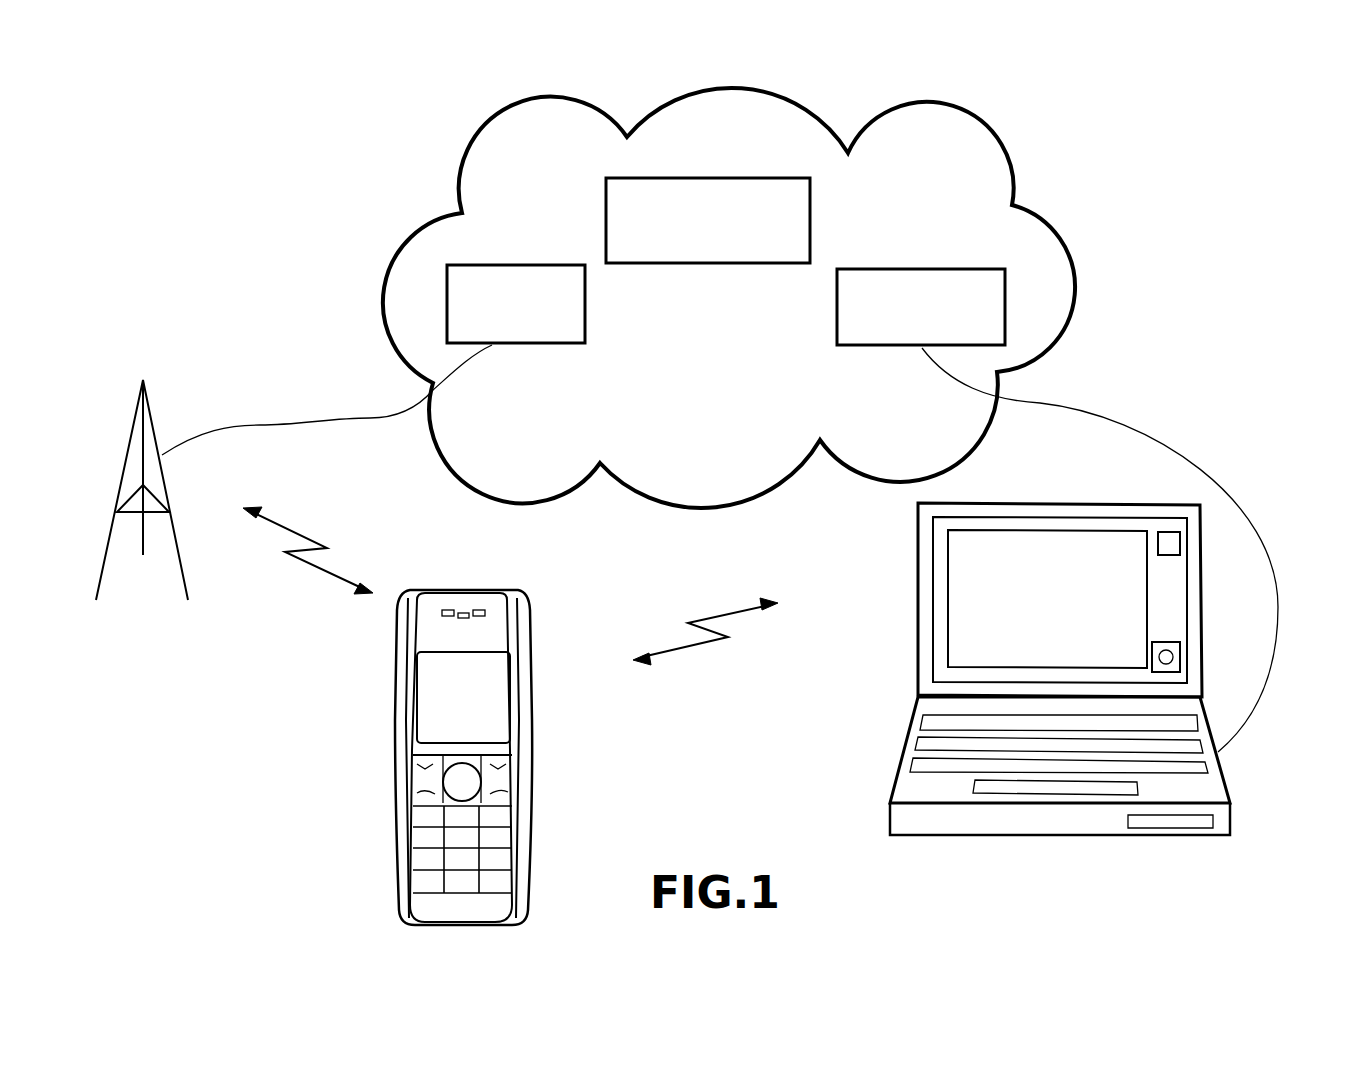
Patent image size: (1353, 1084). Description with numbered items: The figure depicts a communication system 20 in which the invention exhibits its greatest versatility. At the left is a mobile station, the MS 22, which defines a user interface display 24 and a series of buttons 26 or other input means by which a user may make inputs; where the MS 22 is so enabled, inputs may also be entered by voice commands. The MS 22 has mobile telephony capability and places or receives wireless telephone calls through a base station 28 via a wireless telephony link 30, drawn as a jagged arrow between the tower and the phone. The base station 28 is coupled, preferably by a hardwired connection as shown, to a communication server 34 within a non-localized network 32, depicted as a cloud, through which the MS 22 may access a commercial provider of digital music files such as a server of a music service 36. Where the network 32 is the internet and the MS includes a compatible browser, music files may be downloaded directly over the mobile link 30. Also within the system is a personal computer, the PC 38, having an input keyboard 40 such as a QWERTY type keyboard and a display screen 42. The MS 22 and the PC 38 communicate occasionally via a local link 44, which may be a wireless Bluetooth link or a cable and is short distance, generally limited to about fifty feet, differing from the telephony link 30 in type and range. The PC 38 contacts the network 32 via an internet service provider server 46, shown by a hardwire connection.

The communication system 20 is at (306, 834).
The MS 22 is at (480, 757).
The user interface display 24 is at (428, 683).
The buttons 26 is at (420, 838).
The base station 28 is at (168, 495).
The wireless telephony link 30 is at (300, 533).
The non-localized network 32 is at (755, 498).
The communication server 34 is at (445, 268).
The music service 36 is at (742, 178).
The PC 38 is at (1029, 647).
The input keyboard 40 is at (918, 743).
The display screen 42 is at (1040, 551).
The local link 44 is at (722, 613).
The internet service provider server 46 is at (1005, 300).